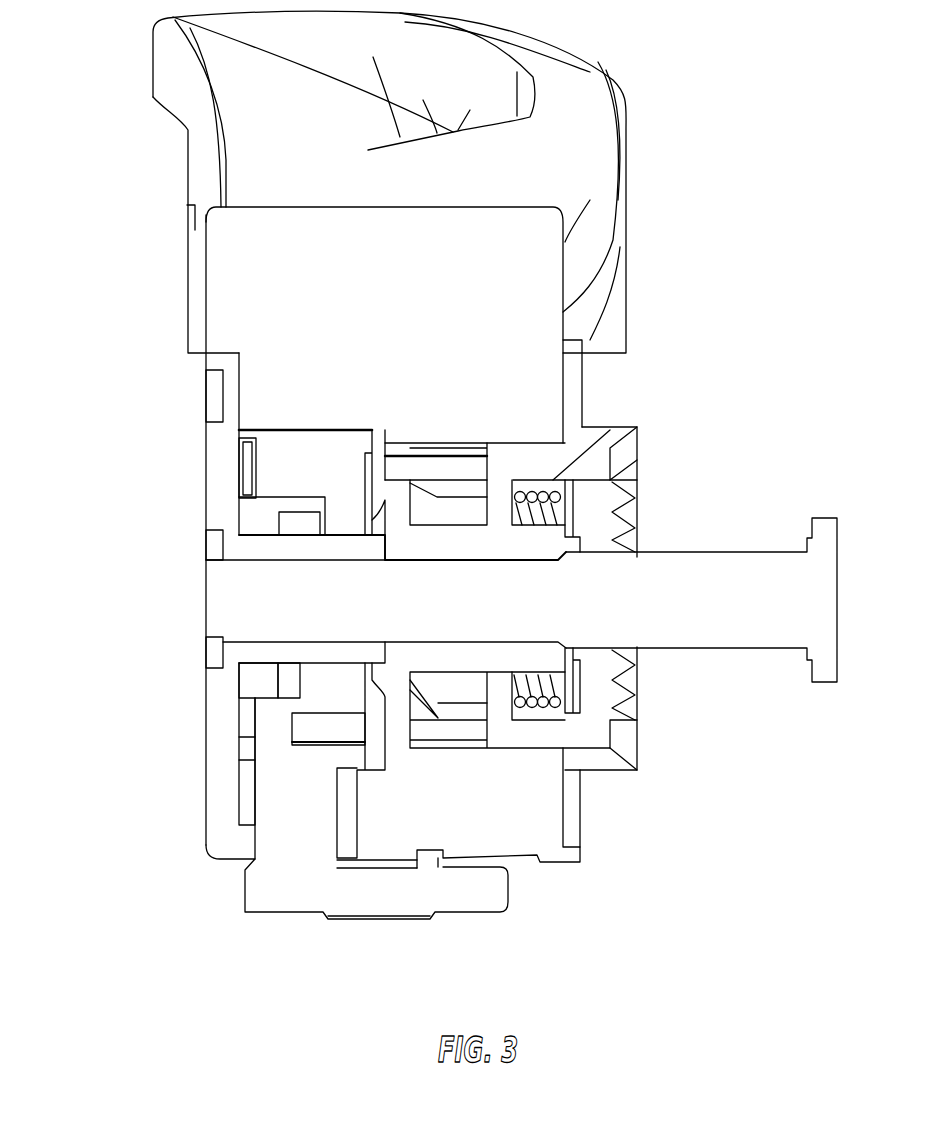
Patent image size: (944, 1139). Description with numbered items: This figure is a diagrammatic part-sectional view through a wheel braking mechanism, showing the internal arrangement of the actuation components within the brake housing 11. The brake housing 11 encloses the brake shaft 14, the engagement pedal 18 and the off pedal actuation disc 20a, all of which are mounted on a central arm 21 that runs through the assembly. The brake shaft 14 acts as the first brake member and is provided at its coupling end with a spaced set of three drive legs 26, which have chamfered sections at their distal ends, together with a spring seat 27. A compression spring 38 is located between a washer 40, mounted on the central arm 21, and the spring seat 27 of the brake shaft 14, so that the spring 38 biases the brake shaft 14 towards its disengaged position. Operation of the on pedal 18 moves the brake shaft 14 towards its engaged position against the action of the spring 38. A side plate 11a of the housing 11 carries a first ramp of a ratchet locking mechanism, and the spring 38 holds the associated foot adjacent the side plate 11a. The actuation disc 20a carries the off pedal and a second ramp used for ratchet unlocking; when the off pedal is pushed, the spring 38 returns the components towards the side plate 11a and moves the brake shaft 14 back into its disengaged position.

The brake housing 11 is at (553, 168).
The side plate 11a is at (220, 470).
The brake shaft 14 is at (617, 770).
The engagement (brake on) pedal 18 is at (378, 900).
The actuation disc 20a is at (245, 683).
The central arm 21 is at (725, 573).
The drive legs 26 is at (447, 470).
The spring seat 27 is at (608, 432).
The compression spring 38 is at (532, 708).
The washer 40 is at (625, 473).